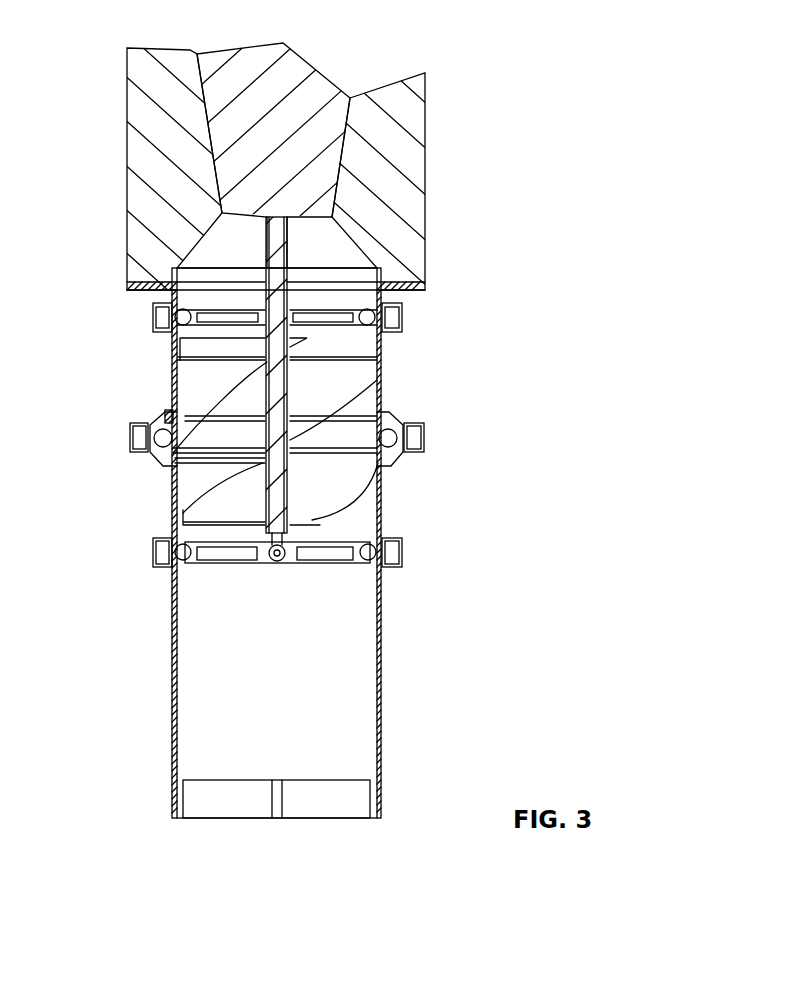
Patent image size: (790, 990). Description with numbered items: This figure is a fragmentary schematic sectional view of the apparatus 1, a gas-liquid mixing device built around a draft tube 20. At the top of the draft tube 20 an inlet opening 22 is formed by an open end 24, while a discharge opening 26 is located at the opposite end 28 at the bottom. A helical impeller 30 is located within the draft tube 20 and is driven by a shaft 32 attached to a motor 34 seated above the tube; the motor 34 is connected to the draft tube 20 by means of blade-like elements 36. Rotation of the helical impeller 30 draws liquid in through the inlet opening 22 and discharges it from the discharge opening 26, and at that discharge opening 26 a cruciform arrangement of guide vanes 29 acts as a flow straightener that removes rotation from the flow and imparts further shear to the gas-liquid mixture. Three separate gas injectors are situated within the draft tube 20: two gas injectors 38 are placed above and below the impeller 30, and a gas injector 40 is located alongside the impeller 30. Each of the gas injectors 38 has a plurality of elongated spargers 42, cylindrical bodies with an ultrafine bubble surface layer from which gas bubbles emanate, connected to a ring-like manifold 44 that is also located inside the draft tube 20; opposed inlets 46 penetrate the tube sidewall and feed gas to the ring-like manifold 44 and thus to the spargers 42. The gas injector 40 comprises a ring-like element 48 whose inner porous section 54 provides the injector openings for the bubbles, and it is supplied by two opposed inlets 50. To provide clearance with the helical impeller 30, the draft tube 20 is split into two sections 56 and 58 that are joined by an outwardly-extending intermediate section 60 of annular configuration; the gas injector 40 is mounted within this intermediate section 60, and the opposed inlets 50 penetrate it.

The apparatus 1 is at (608, 335).
The draft tube 20 is at (402, 600).
The inlet opening 22 is at (378, 268).
The open end 24 is at (198, 295).
The discharge opening 26 is at (367, 818).
The opposite end 28 is at (381, 772).
The guide vanes 29 is at (316, 806).
The helical impeller 30 is at (337, 473).
The shaft 32 is at (278, 389).
The motor 34 is at (312, 97).
The blade-like elements 36 is at (148, 160).
The gas injectors 38 is at (345, 297).
The gas injector 40 is at (177, 477).
The spargers 42 is at (236, 320).
The ring-like manifold 44 is at (302, 318).
The inlets 46 is at (398, 333).
The ring-like element 48 is at (156, 407).
The opposed inlets 50 is at (140, 453).
The inner porous section 54 is at (173, 453).
The draft tube section 56 is at (397, 394).
The draft tube section 58 is at (400, 677).
The outwardly-extending intermediate section 60 is at (397, 456).